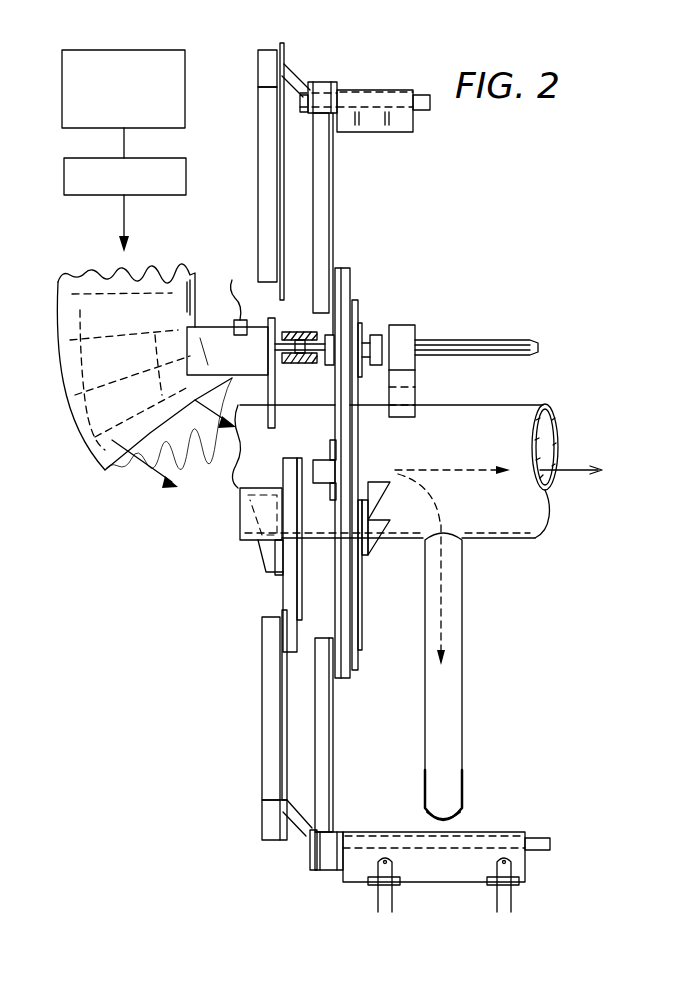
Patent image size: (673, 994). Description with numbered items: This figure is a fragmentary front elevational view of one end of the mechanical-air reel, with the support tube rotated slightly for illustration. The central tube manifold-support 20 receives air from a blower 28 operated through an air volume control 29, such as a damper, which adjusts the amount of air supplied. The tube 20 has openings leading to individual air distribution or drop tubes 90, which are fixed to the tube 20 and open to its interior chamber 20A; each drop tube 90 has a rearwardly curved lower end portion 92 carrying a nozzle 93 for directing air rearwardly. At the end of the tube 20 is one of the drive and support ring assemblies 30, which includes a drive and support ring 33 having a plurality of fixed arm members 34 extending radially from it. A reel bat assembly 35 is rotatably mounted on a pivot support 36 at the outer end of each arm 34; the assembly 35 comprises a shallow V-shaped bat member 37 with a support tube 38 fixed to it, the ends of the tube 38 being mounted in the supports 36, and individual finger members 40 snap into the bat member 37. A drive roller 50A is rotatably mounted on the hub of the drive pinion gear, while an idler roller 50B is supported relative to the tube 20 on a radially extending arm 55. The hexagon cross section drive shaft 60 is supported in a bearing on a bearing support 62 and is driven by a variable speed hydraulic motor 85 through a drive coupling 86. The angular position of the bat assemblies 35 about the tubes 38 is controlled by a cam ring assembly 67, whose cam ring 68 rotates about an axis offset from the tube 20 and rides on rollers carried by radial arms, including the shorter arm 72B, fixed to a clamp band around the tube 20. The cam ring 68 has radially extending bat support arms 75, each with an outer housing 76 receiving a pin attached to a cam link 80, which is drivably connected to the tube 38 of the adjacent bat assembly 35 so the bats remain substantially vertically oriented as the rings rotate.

The tube manifold-support 20 is at (507, 538).
The interior chamber 20A is at (548, 440).
The blower 28 is at (80, 197).
The air volume control 29 is at (75, 50).
The drive and support ring assembly 30 is at (350, 255).
The drive and support ring 33 is at (363, 636).
The arm member 34 is at (330, 172).
The reel bat assembly 35 is at (460, 832).
The support 36 is at (318, 82).
The bat member 37 is at (368, 90).
The support tube 38 is at (300, 112).
The finger member 40 is at (380, 895).
The drive roller 50A is at (385, 322).
The idler roller 50B is at (365, 555).
The radially extending arm 55 is at (390, 487).
The drive shaft 60 is at (505, 340).
The bearing support 62 is at (412, 405).
The cam ring assembly 67 is at (272, 604).
The cam ring 68 is at (290, 590).
The arm 72B is at (262, 548).
The bat support arm 75 is at (262, 168).
The outer housing 76 is at (265, 72).
The cam link 80 is at (283, 45).
The variable speed hydraulic motor 85 is at (215, 327).
The drive coupling 86 is at (310, 333).
The drop tube 90 is at (452, 635).
The lower end portion 92 is at (437, 800).
The nozzle 93 is at (426, 810).